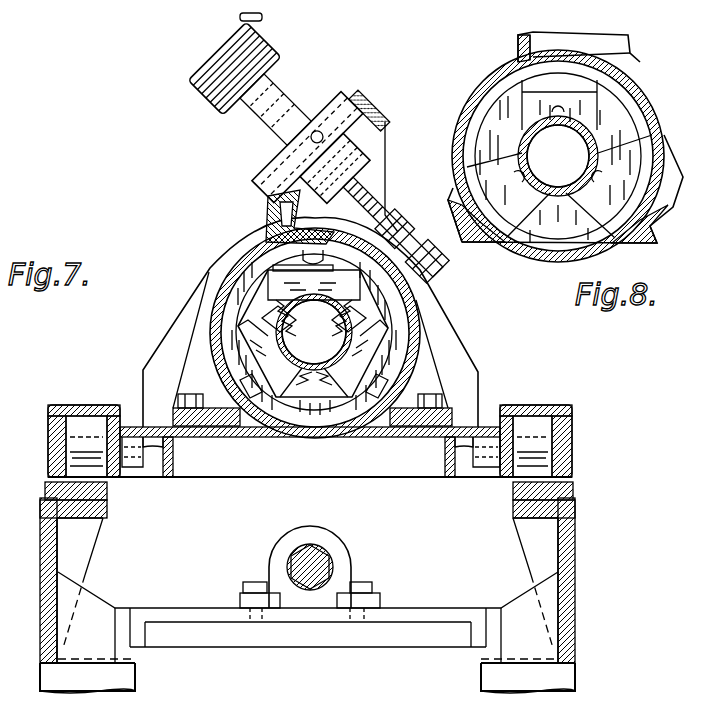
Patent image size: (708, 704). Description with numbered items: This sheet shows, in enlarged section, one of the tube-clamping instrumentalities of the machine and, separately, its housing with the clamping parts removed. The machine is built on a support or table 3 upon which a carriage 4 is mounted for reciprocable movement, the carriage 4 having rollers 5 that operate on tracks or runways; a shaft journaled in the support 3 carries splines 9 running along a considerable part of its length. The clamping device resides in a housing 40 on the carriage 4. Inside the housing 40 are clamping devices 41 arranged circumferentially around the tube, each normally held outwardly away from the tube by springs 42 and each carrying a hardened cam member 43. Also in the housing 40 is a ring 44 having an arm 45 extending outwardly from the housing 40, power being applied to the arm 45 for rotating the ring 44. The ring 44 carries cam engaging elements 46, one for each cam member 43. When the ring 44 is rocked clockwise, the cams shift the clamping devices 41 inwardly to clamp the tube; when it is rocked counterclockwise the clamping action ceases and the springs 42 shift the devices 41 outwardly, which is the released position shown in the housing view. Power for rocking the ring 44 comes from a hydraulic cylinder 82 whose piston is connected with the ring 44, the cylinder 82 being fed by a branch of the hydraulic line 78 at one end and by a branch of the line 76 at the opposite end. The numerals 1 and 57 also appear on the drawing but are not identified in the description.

In FIG. 7, the shaft 1 is at (340, 336).
In FIG. 7, the support or table 3 is at (46, 631).
In FIG. 7, the carriage 4 is at (205, 478).
In FIG. 7, the rollers 5 is at (100, 478).
In FIG. 7, the splines 9 is at (313, 548).
In FIG. 7, the housing 40 is at (213, 356).
In FIG. 8, the housing 40 is at (490, 76).
In FIG. 7, the clamping devices 41 is at (283, 262).
In FIG. 7, the springs 42 is at (268, 302).
In FIG. 7, the hardened cam member 43 is at (250, 347).
In FIG. 7, the ring 44 is at (300, 270).
In FIG. 7, the arm 45 is at (422, 232).
In FIG. 7, the cam engaging elements 46 is at (410, 368).
In FIG. 7, the base foot 57 is at (73, 696).
In FIG. 7, the line 76 is at (318, 134).
In FIG. 7, the line 78 is at (262, 18).
In FIG. 7, the cylinder 82 is at (284, 84).